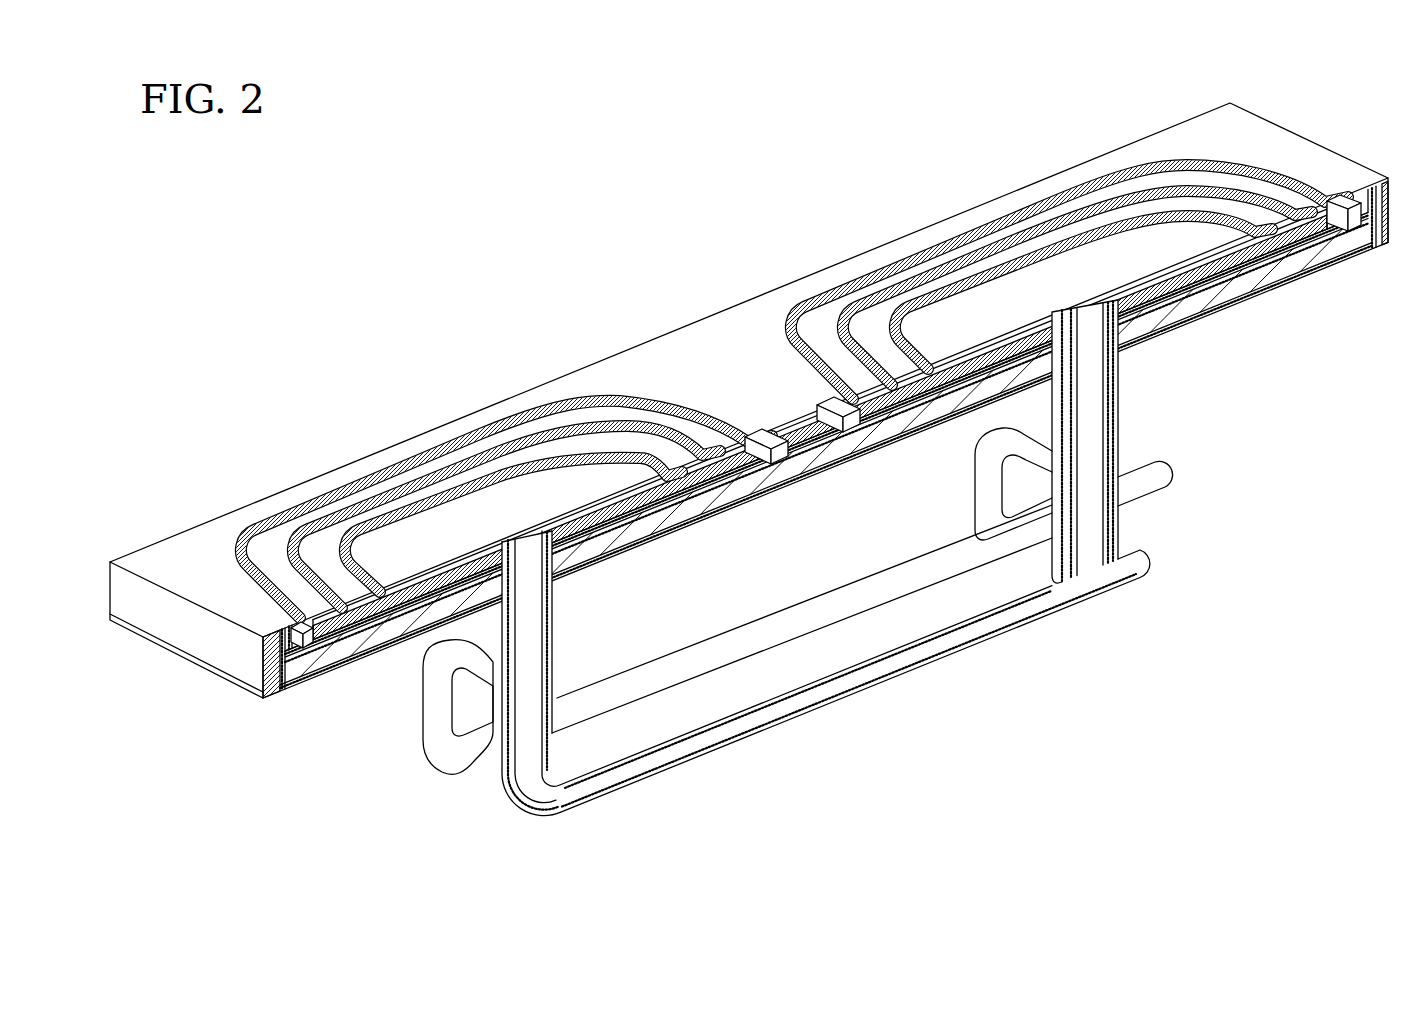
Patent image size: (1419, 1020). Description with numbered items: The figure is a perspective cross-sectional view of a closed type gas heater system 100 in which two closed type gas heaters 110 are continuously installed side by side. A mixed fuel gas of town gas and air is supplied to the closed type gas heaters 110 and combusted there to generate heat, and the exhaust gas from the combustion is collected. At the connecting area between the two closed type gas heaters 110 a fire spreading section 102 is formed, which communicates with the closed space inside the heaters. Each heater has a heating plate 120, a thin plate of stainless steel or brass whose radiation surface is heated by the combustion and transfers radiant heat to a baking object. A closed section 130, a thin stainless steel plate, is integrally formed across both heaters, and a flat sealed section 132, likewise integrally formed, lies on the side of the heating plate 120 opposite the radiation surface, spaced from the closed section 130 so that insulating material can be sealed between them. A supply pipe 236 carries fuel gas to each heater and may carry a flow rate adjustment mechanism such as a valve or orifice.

The closed type gas heater system 100 is at (724, 193).
The closed type gas heater 110 is at (1218, 121).
The heating plate 120 is at (682, 373).
The fire spreading section 102 is at (797, 428).
The closed section 130 is at (282, 689).
The sealed section 132 is at (341, 674).
The supply pipe 236 is at (985, 488).